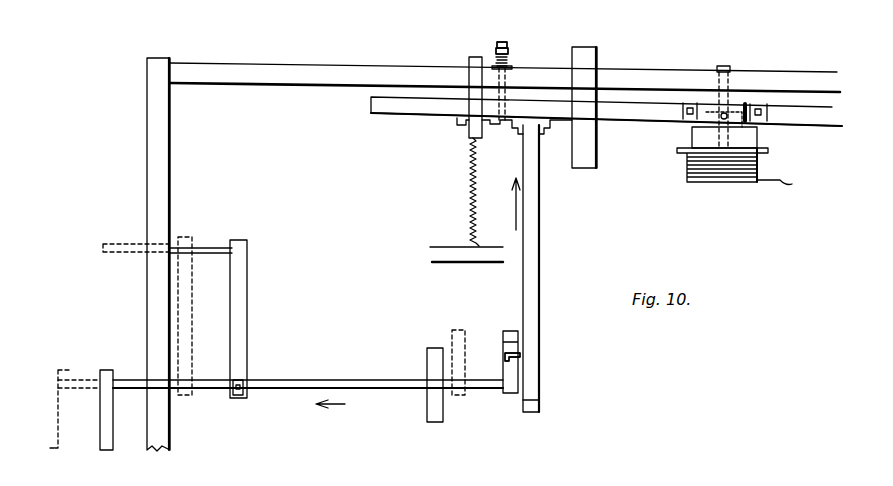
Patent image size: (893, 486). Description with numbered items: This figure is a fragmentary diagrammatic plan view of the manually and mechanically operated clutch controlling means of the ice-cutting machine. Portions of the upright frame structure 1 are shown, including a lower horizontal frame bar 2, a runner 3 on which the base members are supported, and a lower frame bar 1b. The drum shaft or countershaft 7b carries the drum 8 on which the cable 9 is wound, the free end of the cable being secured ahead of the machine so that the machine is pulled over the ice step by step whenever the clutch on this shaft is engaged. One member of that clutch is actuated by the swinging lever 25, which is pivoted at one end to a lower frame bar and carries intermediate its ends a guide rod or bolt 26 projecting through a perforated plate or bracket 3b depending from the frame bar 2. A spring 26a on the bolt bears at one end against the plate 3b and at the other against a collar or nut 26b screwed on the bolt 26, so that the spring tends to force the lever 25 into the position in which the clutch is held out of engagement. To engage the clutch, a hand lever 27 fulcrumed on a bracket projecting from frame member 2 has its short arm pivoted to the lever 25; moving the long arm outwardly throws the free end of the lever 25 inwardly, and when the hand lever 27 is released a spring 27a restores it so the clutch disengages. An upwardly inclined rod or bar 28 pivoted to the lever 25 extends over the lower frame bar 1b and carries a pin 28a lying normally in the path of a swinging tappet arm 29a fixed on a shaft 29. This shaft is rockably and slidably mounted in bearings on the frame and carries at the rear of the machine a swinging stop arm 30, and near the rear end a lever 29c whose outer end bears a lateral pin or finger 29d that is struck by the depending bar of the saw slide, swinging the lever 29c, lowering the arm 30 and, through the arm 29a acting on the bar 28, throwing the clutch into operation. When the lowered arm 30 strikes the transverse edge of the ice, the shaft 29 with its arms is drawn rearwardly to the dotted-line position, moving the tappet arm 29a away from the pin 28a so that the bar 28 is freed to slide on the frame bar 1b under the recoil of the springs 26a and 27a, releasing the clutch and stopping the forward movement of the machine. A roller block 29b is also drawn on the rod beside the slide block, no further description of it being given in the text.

The upright frame structure 1 is at (158, 254).
The lower frame bar 1b is at (443, 250).
The horizontal base member 2 is at (282, 67).
The runner 3 is at (584, 107).
The perforated plate or bracket 3b is at (510, 67).
The countershaft 7b is at (729, 70).
The drum 8 is at (766, 164).
The cable 9 is at (781, 184).
The swinging lever 25 is at (418, 113).
The guide rod or bolt 26 is at (504, 41).
The spring 26a is at (508, 56).
The collar or nut 26b is at (498, 43).
The hand lever 27 is at (469, 61).
The spring 27a is at (471, 152).
The upwardly inclined rod or bar 28 is at (540, 238).
The pin 28a is at (518, 365).
The shaft 29 is at (298, 385).
The swinging tappet arm 29a is at (503, 375).
The roller block 29b is at (446, 376).
The lever 29c is at (243, 293).
The lateral pin or finger 29d is at (215, 251).
The swinging arm 30 is at (100, 395).